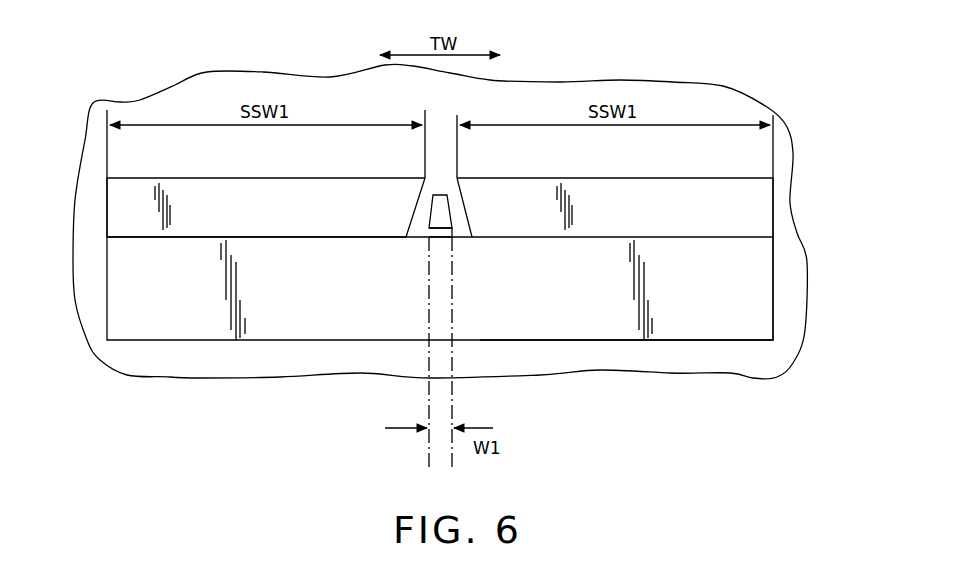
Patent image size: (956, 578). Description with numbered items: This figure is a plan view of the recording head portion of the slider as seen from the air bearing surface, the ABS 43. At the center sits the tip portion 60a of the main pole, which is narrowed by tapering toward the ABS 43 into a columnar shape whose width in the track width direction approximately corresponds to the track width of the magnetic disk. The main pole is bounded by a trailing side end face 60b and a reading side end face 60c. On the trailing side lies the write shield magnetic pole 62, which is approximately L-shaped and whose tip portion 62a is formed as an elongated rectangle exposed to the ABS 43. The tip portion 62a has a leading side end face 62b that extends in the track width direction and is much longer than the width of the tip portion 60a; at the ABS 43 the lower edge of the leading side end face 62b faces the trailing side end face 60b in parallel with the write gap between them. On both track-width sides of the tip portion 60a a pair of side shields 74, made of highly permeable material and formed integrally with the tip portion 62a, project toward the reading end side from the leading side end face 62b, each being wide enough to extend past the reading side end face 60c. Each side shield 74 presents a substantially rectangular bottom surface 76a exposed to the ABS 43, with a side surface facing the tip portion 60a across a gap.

The ABS 43 is at (782, 367).
The write shield magnetic pole 62 is at (213, 344).
The tip portion of the write shield magnetic pole 62a is at (698, 330).
The leading side end face 62b is at (334, 237).
The side shield 74 is at (237, 178).
The bottom surface of the side shield 76a is at (120, 203).
The reading side end face of the main pole 60c is at (440, 193).
The trailing side end face of the main pole 60b is at (443, 210).
The tip portion of the main pole 60a is at (448, 230).